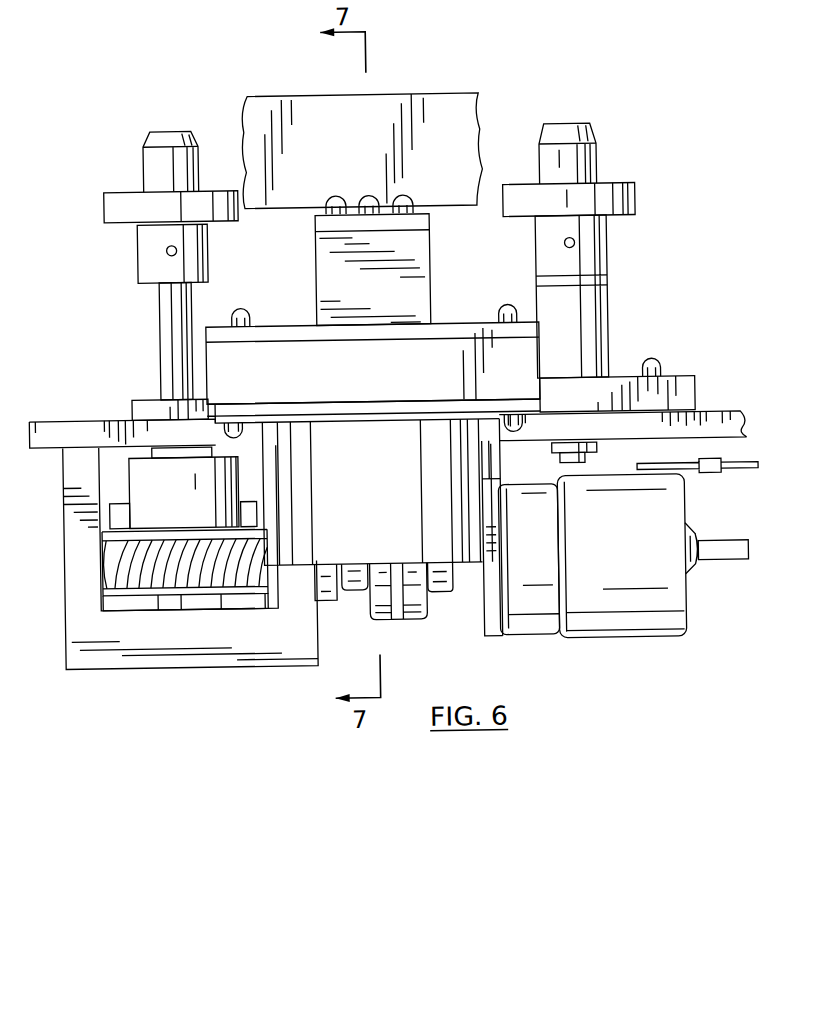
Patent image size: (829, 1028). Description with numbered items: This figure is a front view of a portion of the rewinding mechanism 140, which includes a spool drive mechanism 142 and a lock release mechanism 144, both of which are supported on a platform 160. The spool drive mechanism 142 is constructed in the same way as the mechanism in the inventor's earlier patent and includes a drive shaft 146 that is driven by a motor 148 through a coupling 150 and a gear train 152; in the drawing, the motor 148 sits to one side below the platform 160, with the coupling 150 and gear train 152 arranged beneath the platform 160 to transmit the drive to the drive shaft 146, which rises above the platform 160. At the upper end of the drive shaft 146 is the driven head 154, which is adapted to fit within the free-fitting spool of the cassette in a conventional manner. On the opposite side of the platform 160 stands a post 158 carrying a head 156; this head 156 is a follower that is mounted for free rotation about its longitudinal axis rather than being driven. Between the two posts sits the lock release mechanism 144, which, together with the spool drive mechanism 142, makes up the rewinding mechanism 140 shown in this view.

The rewinding mechanism 140 is at (213, 93).
The spool drive mechanism 142 is at (120, 171).
The lock release mechanism 144 is at (299, 283).
The drive shaft 146 is at (169, 333).
The motor 148 is at (597, 621).
The coupling 150 is at (405, 614).
The gear train 152 is at (140, 576).
The driven head 154 is at (151, 161).
The head 156 is at (589, 161).
The post 158 is at (590, 306).
The platform 160 is at (710, 417).